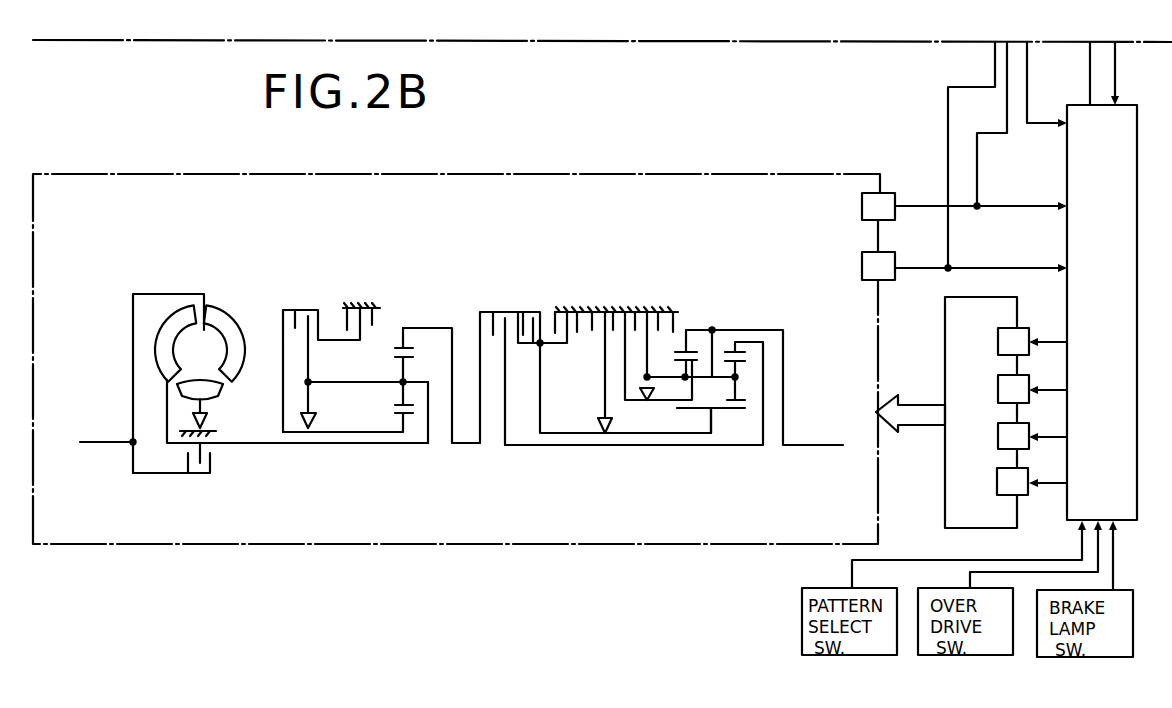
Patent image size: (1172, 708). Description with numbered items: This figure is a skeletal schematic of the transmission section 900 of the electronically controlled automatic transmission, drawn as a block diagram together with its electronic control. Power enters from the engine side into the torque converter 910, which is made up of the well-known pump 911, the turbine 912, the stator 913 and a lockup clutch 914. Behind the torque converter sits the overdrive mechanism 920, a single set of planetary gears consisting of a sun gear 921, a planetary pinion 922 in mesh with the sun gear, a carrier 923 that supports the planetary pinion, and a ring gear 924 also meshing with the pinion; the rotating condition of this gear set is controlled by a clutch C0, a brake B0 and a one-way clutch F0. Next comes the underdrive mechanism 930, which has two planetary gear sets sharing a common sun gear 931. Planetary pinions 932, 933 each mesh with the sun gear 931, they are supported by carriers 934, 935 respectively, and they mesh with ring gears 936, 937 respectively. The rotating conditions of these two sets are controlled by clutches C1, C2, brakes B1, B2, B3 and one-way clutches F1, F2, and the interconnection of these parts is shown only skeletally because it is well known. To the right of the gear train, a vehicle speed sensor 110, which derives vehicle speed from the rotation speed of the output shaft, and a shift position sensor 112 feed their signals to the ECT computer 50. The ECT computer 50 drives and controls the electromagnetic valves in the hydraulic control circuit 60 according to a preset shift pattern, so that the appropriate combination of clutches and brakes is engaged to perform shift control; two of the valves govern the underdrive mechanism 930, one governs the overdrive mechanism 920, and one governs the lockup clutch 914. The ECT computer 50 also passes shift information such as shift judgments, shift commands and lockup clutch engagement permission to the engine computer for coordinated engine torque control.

The transmission section 900 is at (755, 175).
The torque converter 910 is at (233, 357).
The pump 911 is at (229, 323).
The turbine 912 is at (167, 388).
The stator 913 is at (212, 405).
The lockup clutch 914 is at (200, 474).
The overdrive mechanism 920 is at (378, 325).
The sun gear 921 is at (401, 410).
The planetary pinion 922 is at (393, 362).
The carrier 923 is at (406, 381).
The ring gear 924 is at (400, 345).
The underdrive mechanism 930 is at (657, 343).
The common sun gear 931 is at (737, 403).
The planetary pinion 932 is at (693, 365).
The planetary pinion 933 is at (741, 363).
The carrier 934 is at (669, 380).
The carrier 935 is at (725, 382).
The ring gear 936 is at (678, 350).
The ring gear 937 is at (741, 353).
The vehicle speed sensor 110 is at (886, 213).
The shift position sensor 112 is at (886, 273).
The ECT computer 50 is at (1137, 346).
The hydraulic control circuit 60 is at (945, 462).
The clutch C0 is at (305, 310).
The brake B0 is at (374, 310).
The one-way clutch F0 is at (315, 418).
The clutch C1 is at (492, 312).
The clutch C2 is at (535, 312).
The brake B1 is at (578, 312).
The brake B2 is at (623, 312).
The brake B3 is at (672, 312).
The one-way clutch F1 is at (604, 416).
The one-way clutch F2 is at (650, 396).